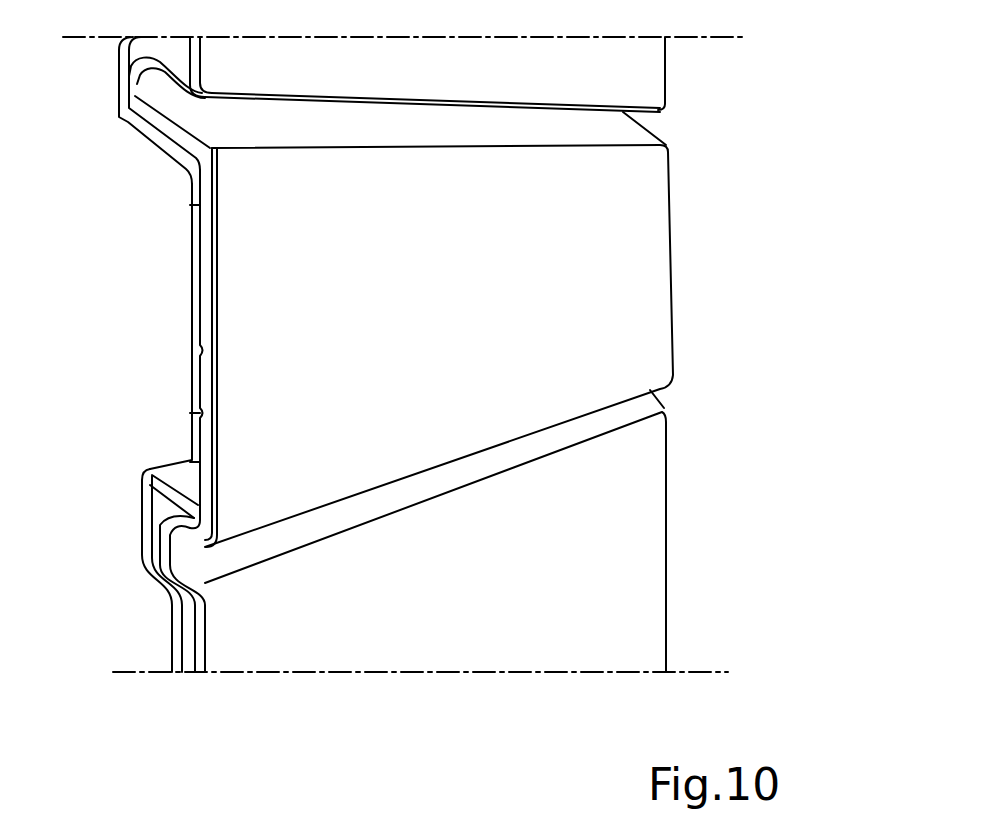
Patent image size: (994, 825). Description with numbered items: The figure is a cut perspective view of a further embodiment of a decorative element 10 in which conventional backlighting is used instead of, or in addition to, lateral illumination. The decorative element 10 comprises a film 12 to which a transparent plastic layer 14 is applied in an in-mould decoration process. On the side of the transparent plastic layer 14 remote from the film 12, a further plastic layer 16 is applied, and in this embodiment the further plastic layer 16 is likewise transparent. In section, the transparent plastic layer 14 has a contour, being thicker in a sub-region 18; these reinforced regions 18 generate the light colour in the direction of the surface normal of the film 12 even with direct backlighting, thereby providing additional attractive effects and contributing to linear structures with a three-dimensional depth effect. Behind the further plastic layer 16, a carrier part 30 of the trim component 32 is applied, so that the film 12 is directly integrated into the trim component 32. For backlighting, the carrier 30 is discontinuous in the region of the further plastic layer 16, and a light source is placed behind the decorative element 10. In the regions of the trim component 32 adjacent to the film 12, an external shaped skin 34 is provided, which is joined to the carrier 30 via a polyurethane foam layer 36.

The decorative element 10 is at (727, 197).
The film 12 is at (650, 309).
The transparent plastic layer 14 is at (205, 248).
The further plastic layer 16 is at (200, 305).
The sub-region 18 is at (200, 210).
The carrier part 30 is at (177, 660).
The trim component 32 is at (717, 448).
The external shaped skin 34 is at (643, 548).
The polyurethane foam layer 36 is at (188, 645).